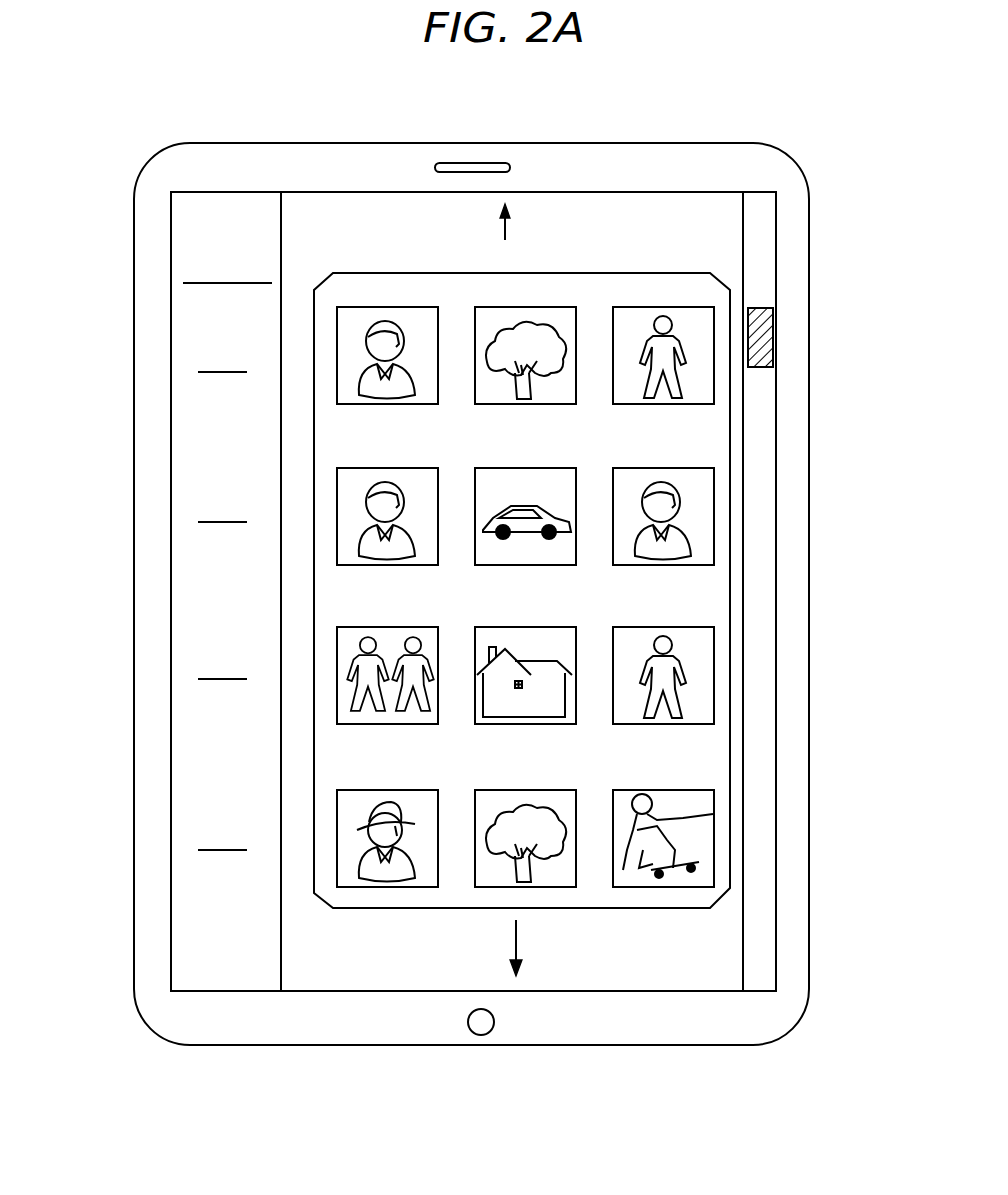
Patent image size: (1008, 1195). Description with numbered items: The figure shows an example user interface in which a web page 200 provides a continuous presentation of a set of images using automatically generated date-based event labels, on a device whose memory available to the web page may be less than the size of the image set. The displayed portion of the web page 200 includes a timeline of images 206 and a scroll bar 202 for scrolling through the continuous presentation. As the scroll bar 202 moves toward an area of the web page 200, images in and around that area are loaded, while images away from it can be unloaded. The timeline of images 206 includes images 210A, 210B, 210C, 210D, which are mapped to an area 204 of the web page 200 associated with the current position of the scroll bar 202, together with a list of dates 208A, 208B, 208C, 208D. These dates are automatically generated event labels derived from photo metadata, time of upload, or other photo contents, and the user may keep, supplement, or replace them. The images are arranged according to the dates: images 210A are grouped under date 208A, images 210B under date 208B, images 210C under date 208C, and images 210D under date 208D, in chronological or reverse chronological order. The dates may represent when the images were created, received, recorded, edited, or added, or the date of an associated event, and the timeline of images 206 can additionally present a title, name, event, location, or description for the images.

The web page 200 is at (624, 142).
The scroll bar 202 is at (776, 341).
The area 204 is at (358, 912).
The timeline of images 206 is at (318, 217).
The date 208A is at (182, 352).
The date 208B is at (182, 502).
The date 208C is at (182, 659).
The date 208D is at (182, 830).
The images 210A is at (669, 306).
The images 210B is at (669, 467).
The images 210C is at (669, 626).
The images 210D is at (669, 789).